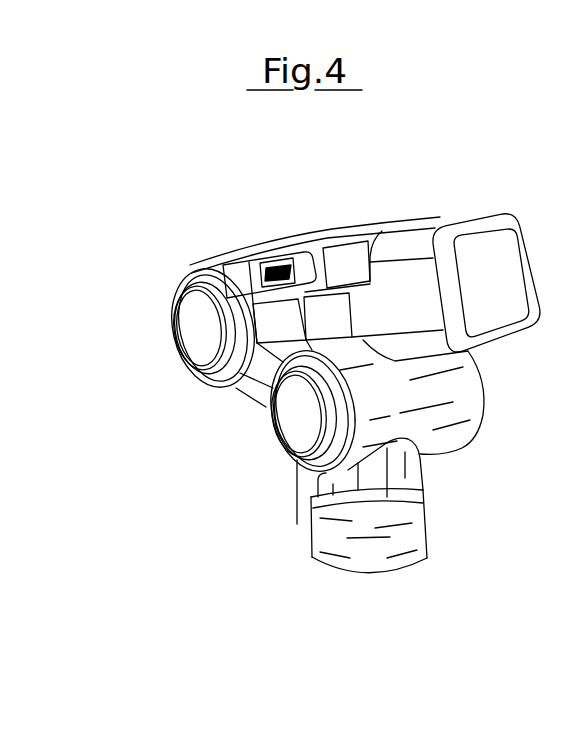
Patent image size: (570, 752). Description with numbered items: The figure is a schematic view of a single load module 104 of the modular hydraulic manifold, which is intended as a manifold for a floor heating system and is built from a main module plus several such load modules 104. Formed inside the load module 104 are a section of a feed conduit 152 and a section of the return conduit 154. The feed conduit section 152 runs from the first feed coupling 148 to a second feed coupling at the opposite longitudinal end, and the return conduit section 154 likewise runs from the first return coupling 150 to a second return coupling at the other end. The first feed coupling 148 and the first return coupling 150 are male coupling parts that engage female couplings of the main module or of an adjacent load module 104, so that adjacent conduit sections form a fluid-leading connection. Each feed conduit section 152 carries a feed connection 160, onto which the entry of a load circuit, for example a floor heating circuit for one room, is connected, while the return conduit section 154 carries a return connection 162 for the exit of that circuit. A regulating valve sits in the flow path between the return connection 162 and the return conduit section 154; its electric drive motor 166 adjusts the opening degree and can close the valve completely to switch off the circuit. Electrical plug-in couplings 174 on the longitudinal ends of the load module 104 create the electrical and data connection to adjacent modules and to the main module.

The load module 104 is at (335, 223).
The electrical plug-in coupling 174 is at (282, 271).
The section of the return conduit 154 is at (190, 339).
The first return coupling 150 is at (193, 368).
The section of the feed conduit 152 is at (292, 425).
The first feed coupling 148 is at (282, 458).
The electric drive motor 166 is at (499, 313).
The return connection 162 is at (297, 527).
The feed connection 160 is at (403, 570).